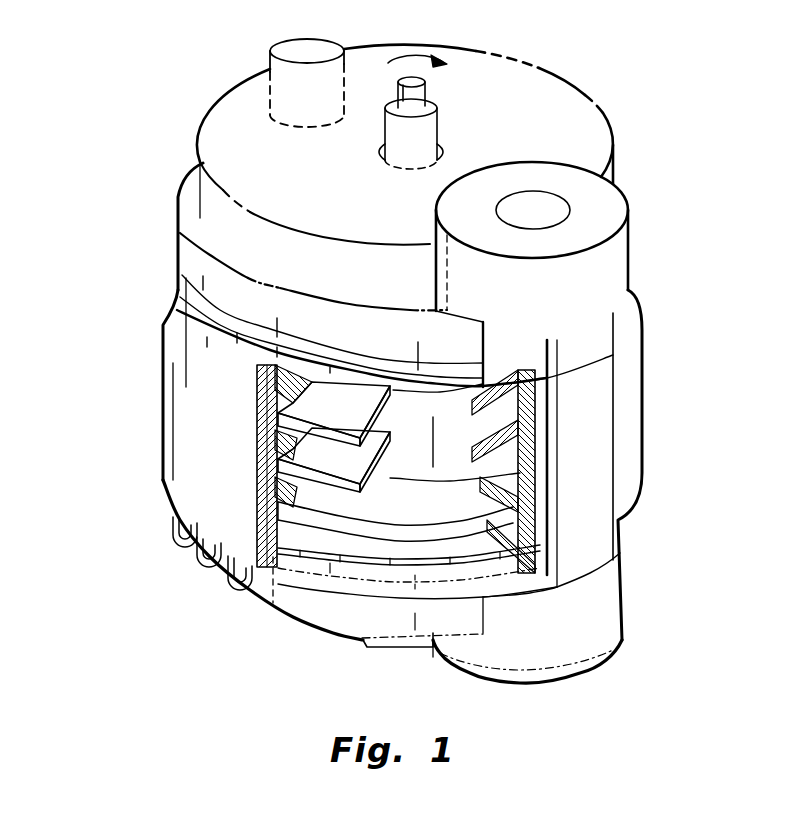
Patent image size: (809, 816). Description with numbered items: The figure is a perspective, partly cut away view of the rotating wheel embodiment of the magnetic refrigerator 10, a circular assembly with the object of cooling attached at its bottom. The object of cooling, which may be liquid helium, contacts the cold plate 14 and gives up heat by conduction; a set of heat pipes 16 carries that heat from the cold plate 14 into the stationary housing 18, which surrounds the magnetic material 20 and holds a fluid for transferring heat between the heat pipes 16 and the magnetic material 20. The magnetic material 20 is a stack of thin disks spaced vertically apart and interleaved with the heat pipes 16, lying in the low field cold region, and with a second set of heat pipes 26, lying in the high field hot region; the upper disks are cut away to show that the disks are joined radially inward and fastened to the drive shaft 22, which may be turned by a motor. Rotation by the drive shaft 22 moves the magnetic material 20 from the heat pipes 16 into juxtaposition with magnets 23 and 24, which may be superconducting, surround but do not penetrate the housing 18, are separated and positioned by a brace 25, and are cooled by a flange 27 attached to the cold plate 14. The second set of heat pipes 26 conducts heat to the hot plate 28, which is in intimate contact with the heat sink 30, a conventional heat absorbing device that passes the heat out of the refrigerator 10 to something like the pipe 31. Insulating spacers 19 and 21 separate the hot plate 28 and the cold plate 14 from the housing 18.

The magnetic refrigerator 10 is at (752, 95).
The cold plate 14 is at (260, 606).
The set of heat pipes 16 is at (240, 452).
The stationary housing 18 is at (228, 362).
The insulating spacer 19 is at (620, 370).
The magnetic material 20 is at (303, 553).
The insulating spacer 21 is at (480, 583).
The drive shaft 22 is at (437, 92).
The magnet 23 is at (603, 263).
The magnet 24 is at (597, 590).
The brace 25 is at (598, 443).
The second set of heat pipes 26 is at (560, 503).
The flange 27 is at (403, 650).
The hot plate 28 is at (192, 268).
The heat sink 30 is at (200, 197).
The pipe 31 is at (268, 62).